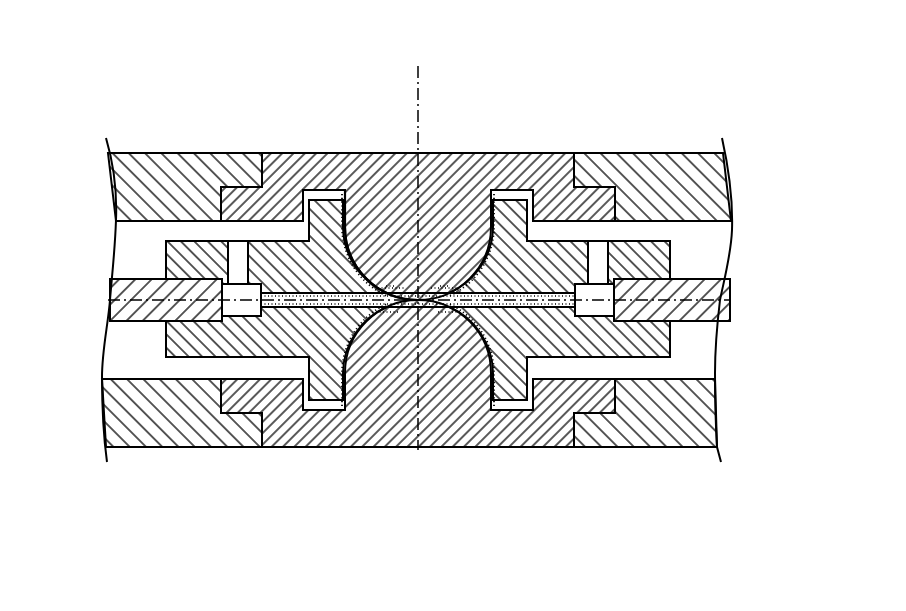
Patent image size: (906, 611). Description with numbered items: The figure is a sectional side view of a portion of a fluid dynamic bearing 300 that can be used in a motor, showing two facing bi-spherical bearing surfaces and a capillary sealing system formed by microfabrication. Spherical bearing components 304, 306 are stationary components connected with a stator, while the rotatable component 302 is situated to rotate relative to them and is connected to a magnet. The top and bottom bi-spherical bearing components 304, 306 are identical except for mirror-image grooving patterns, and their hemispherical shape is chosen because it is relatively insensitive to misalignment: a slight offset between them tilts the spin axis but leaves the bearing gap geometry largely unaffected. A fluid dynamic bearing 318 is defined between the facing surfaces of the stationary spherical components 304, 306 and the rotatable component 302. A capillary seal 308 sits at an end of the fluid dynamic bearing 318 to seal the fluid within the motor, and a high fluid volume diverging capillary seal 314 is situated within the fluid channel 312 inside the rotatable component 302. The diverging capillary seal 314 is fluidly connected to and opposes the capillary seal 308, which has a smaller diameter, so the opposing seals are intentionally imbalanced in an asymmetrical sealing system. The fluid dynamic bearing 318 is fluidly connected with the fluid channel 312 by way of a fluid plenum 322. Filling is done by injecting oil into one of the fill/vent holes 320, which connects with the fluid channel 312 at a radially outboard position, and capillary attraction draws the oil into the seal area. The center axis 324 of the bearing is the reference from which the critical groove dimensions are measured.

The fluid dynamic bearing 300 is at (154, 94).
The rotatable component 302 is at (647, 340).
The spherical bearing component 304 is at (450, 237).
The spherical bearing component 306 is at (452, 383).
The capillary seal 308 is at (357, 202).
The fluid channel 312 is at (525, 290).
The diverging capillary seal 314 is at (547, 307).
The fluid dynamic bearing 318 is at (340, 207).
The fill/vent hole 320 is at (600, 260).
The fluid plenum 322 is at (381, 316).
The center axis 324 is at (424, 104).